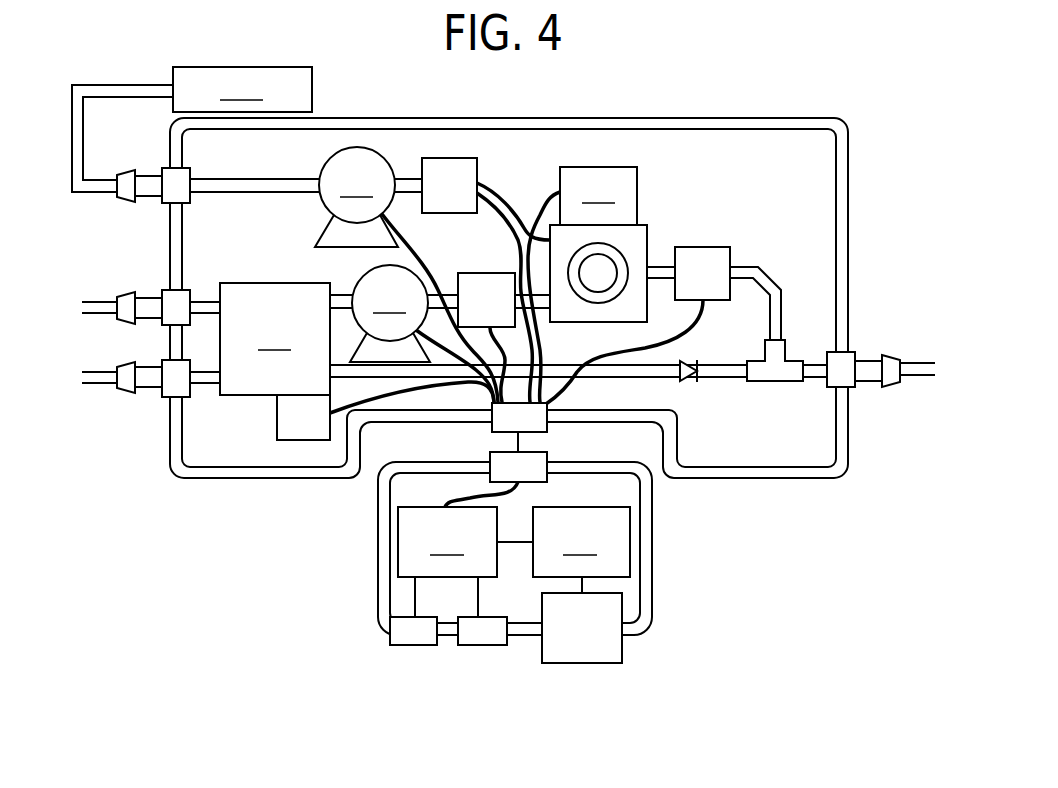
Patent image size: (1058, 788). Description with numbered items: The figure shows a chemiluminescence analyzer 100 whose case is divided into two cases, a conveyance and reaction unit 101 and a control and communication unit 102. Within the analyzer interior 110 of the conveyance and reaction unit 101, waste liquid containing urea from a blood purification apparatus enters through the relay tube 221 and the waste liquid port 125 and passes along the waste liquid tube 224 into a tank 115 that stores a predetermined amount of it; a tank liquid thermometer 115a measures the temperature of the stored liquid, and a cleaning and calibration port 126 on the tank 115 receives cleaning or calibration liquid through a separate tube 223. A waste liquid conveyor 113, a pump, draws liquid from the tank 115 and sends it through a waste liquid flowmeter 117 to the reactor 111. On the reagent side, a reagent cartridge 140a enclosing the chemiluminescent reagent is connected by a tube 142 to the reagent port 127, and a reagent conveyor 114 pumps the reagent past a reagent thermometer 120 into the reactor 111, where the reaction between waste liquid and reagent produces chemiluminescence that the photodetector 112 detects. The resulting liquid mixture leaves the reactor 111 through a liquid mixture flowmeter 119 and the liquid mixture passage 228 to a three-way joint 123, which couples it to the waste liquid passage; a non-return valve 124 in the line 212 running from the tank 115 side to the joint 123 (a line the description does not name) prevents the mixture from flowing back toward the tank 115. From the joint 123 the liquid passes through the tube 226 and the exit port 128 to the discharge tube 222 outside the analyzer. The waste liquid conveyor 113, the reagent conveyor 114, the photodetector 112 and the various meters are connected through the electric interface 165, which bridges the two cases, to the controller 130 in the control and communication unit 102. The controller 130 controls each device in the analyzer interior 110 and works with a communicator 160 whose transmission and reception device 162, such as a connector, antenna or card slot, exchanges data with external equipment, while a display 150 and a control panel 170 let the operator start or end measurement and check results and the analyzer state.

The chemiluminescence analyzer 100 is at (714, 113).
The conveyance and reaction unit 101 is at (813, 113).
The control and communication unit 102 is at (656, 549).
The analyzer interior 110 is at (783, 175).
The reactor 111 is at (650, 226).
The photodetector 112 is at (598, 196).
The waste liquid conveyor 113 is at (390, 313).
The reagent conveyor 114 is at (356, 197).
The tank 115 is at (275, 339).
The tank liquid thermometer 115a is at (277, 432).
The waste liquid flowmeter 117 is at (466, 274).
The liquid mixture flowmeter 119 is at (684, 247).
The reagent thermometer 120 is at (478, 173).
The joint 123 is at (773, 382).
The non-return valve 124 is at (690, 380).
The waste liquid port 125 is at (125, 393).
The cleaning and calibration port 126 is at (125, 323).
The reagent port 127 is at (128, 203).
The exit port 128 is at (893, 386).
The controller 130 is at (447, 542).
The reagent cartridge 140a is at (242, 89).
The tube 142 is at (118, 87).
The display 150 is at (412, 645).
The communicator 160 is at (581, 542).
The transmission and reception device 162 is at (623, 648).
The electric interface 165 is at (490, 454).
The control panel 170 is at (478, 645).
The flow path 212 is at (632, 378).
The relay tube 221 is at (92, 385).
The discharge tube 222 is at (905, 362).
The tube 223 is at (92, 302).
The waste liquid tube 224 is at (200, 386).
The tube 226 is at (808, 360).
The liquid mixture passage 228 is at (761, 262).